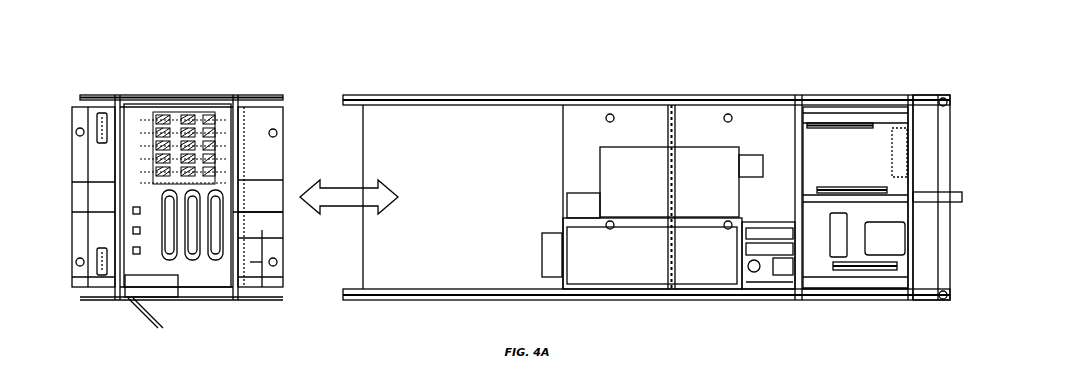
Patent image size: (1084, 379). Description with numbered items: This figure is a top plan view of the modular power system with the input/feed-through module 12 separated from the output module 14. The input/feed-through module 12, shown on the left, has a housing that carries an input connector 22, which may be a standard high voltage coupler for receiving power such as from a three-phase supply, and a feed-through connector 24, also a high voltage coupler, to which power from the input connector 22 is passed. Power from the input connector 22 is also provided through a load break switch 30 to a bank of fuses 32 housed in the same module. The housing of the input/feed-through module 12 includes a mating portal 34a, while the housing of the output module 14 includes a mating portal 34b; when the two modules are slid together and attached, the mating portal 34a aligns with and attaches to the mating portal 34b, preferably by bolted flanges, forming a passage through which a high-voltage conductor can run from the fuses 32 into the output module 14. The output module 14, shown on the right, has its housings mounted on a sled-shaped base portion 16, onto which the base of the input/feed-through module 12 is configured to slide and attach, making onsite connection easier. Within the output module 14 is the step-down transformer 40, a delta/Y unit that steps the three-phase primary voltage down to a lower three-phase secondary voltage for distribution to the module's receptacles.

The input/feed-through module 12 is at (246, 70).
The output module 14 is at (658, 68).
The sled-shaped base portion 16 is at (476, 143).
The input connector 22 is at (87, 122).
The feed-through connector 24 is at (88, 256).
The load break switch 30 is at (165, 118).
The fuses 32 is at (193, 245).
The mating portal 34a is at (250, 262).
The mating portal 34b is at (545, 273).
The step-down transformer 40 is at (632, 189).